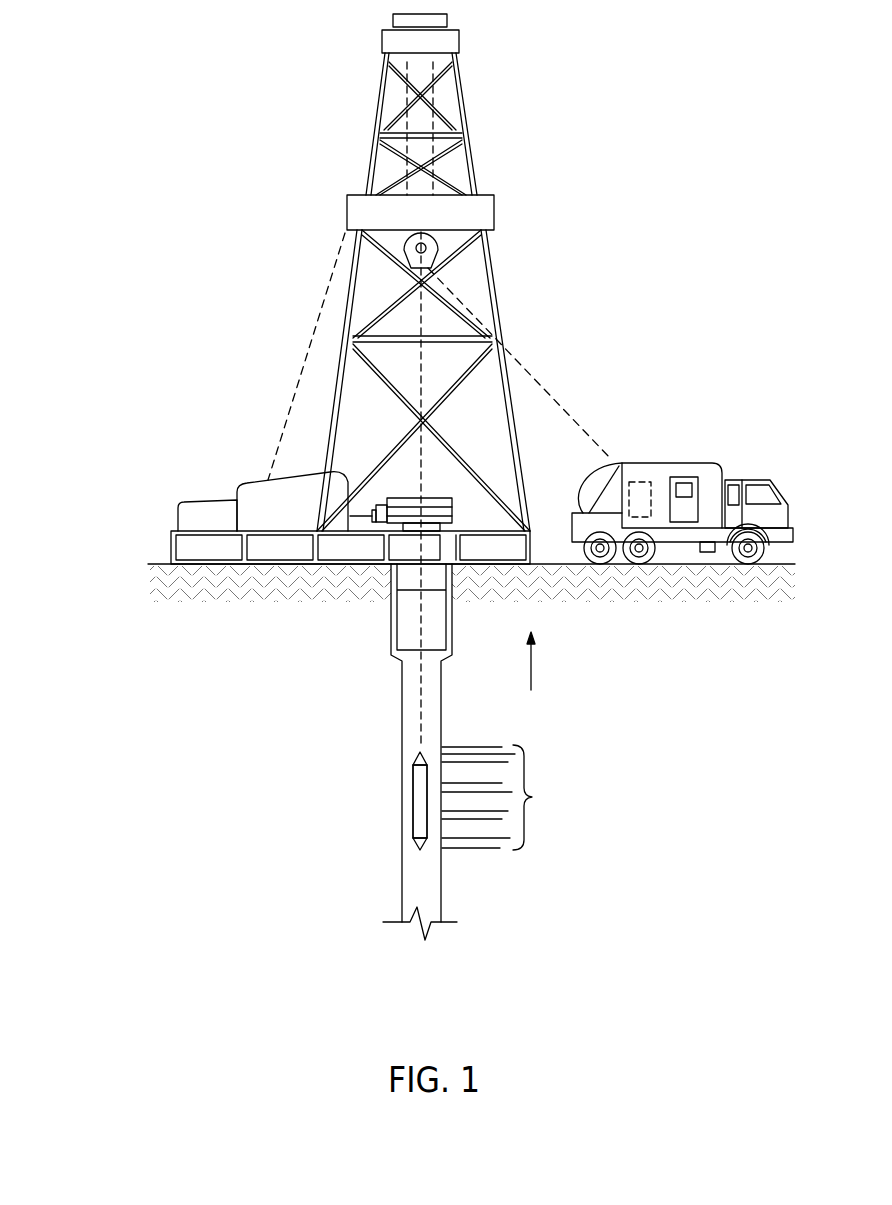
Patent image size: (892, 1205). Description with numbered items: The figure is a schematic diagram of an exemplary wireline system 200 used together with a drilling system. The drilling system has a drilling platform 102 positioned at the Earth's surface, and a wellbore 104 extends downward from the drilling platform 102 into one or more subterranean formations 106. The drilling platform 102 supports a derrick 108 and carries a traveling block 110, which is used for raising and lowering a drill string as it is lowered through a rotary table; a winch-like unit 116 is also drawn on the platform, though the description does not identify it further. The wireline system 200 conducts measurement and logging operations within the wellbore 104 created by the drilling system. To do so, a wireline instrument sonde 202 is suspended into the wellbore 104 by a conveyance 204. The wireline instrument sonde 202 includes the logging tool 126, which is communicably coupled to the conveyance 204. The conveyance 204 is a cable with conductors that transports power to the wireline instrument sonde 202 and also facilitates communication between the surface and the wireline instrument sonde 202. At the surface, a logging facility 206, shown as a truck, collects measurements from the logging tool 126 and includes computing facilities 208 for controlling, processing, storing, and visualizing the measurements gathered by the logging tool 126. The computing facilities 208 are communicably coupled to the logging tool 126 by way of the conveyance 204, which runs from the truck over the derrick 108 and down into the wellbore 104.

The drilling platform 102 is at (171, 540).
The wellbore 104 is at (442, 710).
The subterranean formations 106 is at (509, 797).
The derrick 108 is at (465, 110).
The traveling block 110 is at (438, 243).
The winch 116 is at (437, 498).
The logging tool 126 is at (418, 820).
The wireline system 200 is at (648, 255).
The wireline instrument sonde 202 is at (402, 780).
The conveyance 204 is at (547, 390).
The logging facility 206 is at (714, 463).
The computing facilities 208 is at (645, 482).